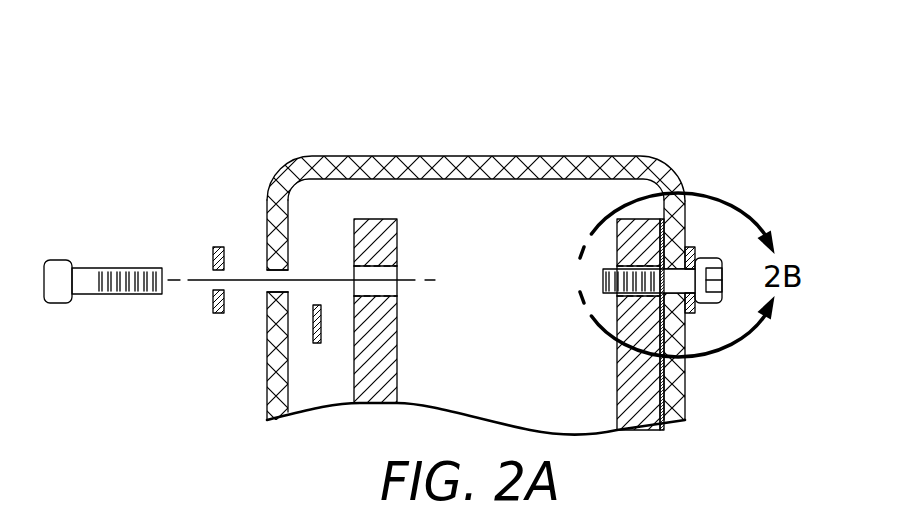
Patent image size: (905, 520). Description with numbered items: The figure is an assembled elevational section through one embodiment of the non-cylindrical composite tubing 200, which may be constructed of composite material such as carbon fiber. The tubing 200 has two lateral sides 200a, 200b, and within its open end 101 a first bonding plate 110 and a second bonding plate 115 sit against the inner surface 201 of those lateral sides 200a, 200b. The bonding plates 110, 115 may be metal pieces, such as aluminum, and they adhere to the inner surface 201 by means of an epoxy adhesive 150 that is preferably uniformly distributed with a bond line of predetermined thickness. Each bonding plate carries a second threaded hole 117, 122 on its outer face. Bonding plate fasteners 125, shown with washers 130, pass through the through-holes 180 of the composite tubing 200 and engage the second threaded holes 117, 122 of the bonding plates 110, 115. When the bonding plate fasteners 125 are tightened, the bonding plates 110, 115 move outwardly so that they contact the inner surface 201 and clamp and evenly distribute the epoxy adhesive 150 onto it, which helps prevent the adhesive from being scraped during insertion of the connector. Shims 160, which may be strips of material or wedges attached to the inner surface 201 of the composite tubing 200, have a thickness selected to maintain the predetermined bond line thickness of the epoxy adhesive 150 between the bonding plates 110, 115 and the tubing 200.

The composite tubing 200 is at (441, 157).
The lateral side 200a is at (267, 386).
The lateral side 200b is at (677, 397).
The inner surface 201 is at (289, 384).
The open end 101 is at (490, 368).
The first bonding plate 110 is at (378, 219).
The second threaded hole 117 is at (397, 289).
The second bonding plate 115 is at (637, 218).
The second threaded hole 122 is at (603, 280).
The bonding plate fastener 125 is at (61, 265).
The washer 130 is at (219, 247).
The shim 160 is at (318, 304).
The through-hole 180 is at (272, 287).
The epoxy adhesive 150 is at (655, 390).